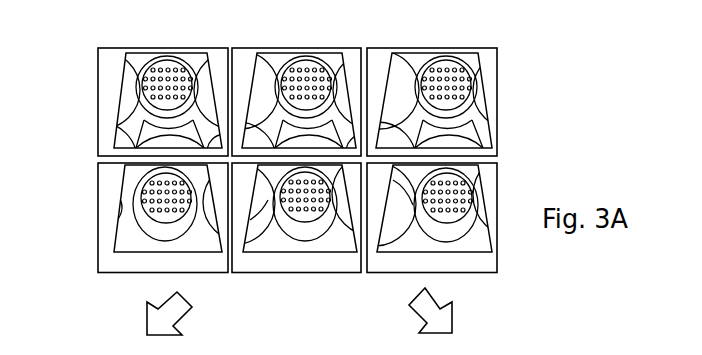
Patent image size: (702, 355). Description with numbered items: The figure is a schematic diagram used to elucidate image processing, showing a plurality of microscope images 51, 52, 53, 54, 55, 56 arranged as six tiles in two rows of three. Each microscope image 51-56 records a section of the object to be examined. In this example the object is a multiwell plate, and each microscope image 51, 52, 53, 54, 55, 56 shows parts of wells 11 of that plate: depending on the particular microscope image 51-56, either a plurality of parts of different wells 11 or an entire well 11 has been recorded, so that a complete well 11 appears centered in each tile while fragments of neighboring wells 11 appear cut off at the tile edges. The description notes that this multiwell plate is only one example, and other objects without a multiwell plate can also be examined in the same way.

The well 11 is at (140, 87).
The microscope image 51 is at (98, 130).
The microscope image 52 is at (256, 48).
The microscope image 53 is at (498, 133).
The microscope image 54 is at (98, 205).
The microscope image 55 is at (268, 273).
The microscope image 56 is at (497, 273).